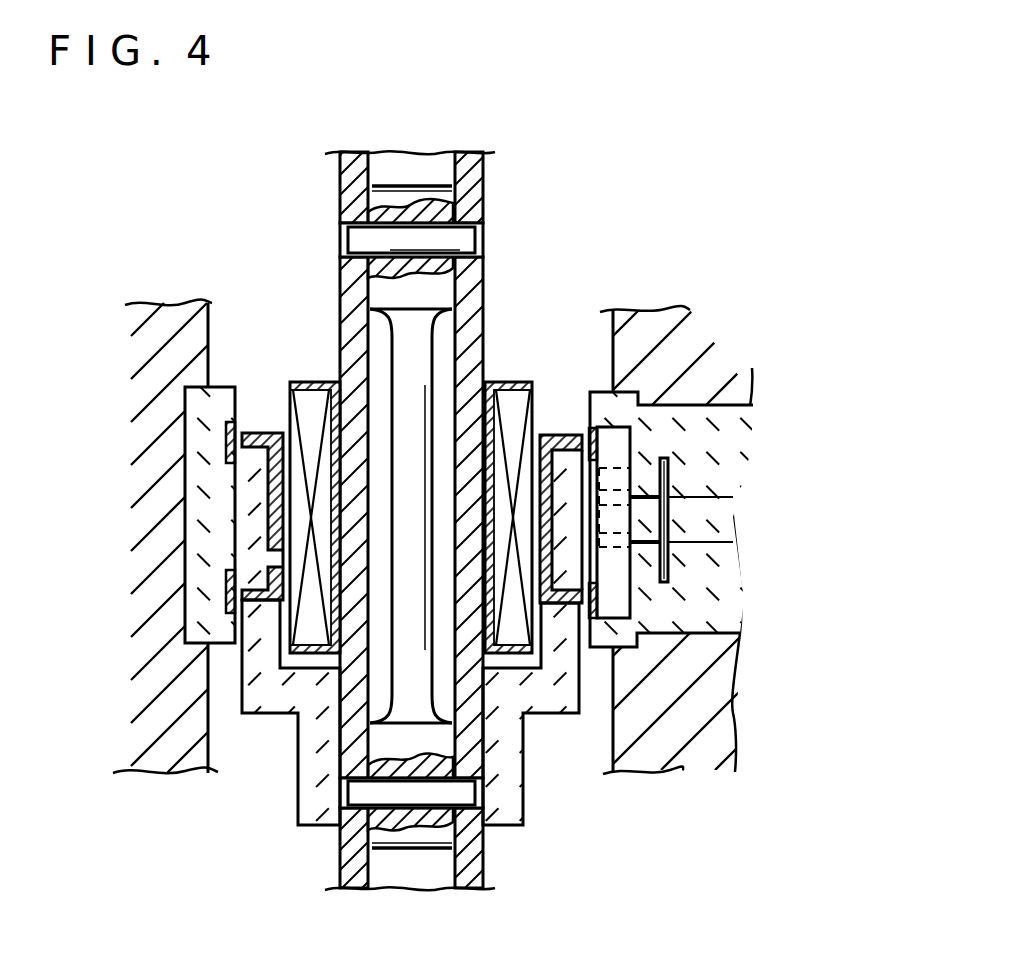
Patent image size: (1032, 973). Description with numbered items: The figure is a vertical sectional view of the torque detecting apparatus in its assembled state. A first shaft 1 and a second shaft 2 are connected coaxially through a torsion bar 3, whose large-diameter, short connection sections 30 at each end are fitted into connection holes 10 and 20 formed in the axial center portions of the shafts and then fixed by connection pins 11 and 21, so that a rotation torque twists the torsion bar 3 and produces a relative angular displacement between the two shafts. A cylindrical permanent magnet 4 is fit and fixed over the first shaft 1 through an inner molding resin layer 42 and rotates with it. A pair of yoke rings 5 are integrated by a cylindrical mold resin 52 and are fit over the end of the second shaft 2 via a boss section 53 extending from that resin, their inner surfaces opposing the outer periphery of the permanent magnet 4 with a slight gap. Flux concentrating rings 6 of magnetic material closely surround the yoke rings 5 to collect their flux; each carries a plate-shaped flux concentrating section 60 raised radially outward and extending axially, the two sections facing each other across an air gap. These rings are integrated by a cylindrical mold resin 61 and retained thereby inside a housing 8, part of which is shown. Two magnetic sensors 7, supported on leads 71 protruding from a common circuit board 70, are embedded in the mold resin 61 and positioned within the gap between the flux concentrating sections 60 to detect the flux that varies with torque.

The first shaft 1 is at (475, 195).
The second shaft 2 is at (490, 858).
The torsion bar 3 is at (420, 350).
The cylindrical permanent magnet 4 is at (385, 467).
The yoke ring 5 is at (257, 433).
The flux concentrating ring 6 is at (230, 440).
The magnetic sensor 7 is at (782, 517).
The housing 8 is at (617, 310).
The connection hole 10 is at (445, 166).
The connection pin 11 is at (468, 240).
The connection hole 20 is at (445, 888).
The connection pin 21 is at (340, 843).
The connection section 30 is at (377, 290).
The molding resin layer 42 is at (316, 382).
The mold resin 52 is at (245, 525).
The boss section 53 is at (515, 790).
The flux concentrating section 60 is at (632, 472).
The mold resin 61 is at (190, 478).
The circuit board 70 is at (668, 507).
The lead 71 is at (668, 573).